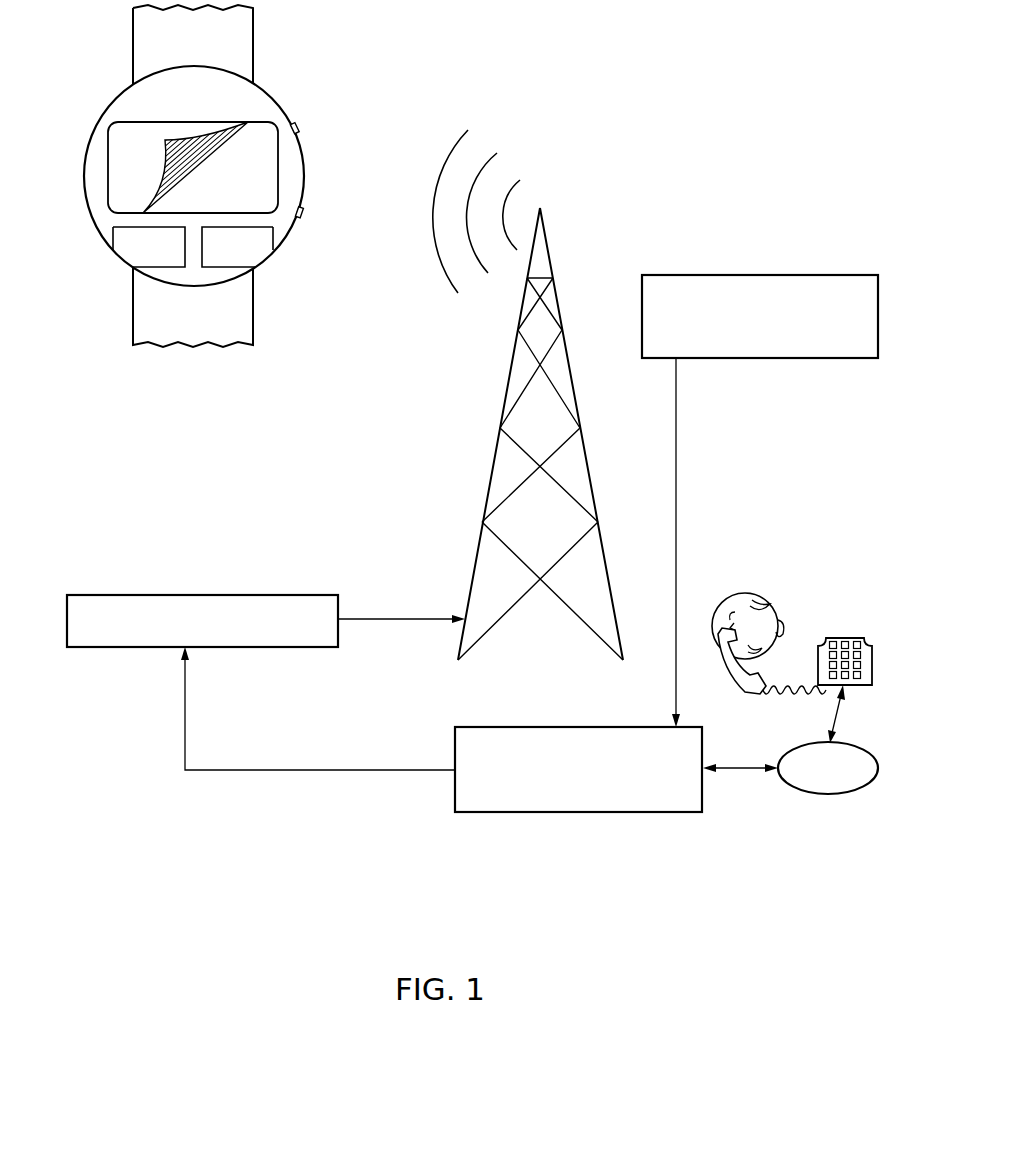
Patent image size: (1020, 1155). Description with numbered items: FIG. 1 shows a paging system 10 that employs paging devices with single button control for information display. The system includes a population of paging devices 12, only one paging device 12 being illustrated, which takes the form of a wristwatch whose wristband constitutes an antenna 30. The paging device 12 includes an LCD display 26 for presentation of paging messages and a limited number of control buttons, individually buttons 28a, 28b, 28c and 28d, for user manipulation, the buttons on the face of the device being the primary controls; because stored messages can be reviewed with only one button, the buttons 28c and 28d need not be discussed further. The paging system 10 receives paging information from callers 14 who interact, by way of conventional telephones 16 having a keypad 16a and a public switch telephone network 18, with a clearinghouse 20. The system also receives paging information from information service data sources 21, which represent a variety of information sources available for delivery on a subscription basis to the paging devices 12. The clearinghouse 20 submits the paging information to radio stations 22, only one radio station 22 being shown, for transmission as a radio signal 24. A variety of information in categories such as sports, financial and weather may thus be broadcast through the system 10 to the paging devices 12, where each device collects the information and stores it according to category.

The paging system 10 is at (830, 186).
The paging device 12 is at (276, 92).
The caller 14 is at (727, 594).
The telephone 16 is at (865, 639).
The keypad keys 16a is at (863, 663).
The public switch telephone network 18 is at (838, 788).
The clearinghouse 20 is at (625, 727).
The information service data sources 21 is at (687, 275).
The radio station 22 is at (323, 600).
The radio signal 24 is at (512, 182).
The LCD display 26 is at (279, 166).
The control button 28a is at (123, 246).
The control button 28b is at (265, 246).
The control button 28c is at (304, 215).
The control button 28d is at (303, 126).
The antenna 30 is at (245, 33).